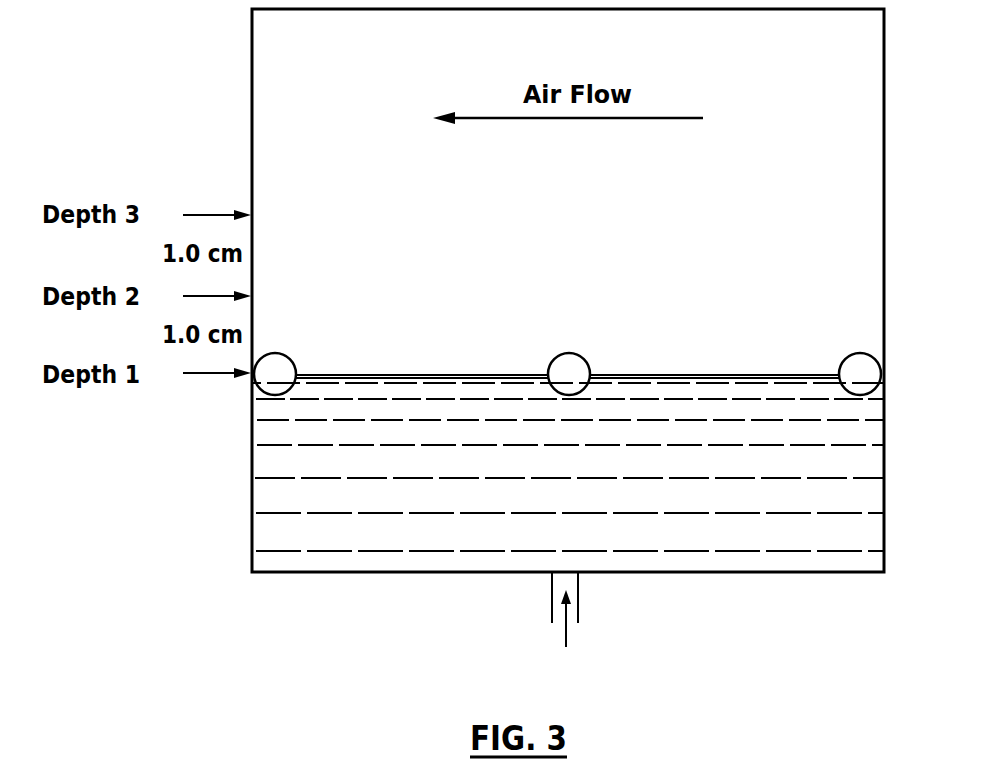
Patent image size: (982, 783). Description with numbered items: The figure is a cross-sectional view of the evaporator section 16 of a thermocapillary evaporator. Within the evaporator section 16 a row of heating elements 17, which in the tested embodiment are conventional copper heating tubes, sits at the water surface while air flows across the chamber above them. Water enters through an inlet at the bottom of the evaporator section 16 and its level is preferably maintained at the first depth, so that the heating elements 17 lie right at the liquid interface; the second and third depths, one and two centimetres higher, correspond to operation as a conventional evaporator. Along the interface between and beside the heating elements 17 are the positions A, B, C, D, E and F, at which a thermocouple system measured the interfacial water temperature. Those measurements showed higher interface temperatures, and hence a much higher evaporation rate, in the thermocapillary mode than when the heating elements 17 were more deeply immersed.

The evaporator section 16 is at (815, 572).
The heating elements 17 is at (296, 367).
The position A is at (323, 353).
The position B is at (410, 353).
The position C is at (514, 353).
The position D is at (620, 353).
The position E is at (725, 353).
The position F is at (814, 353).